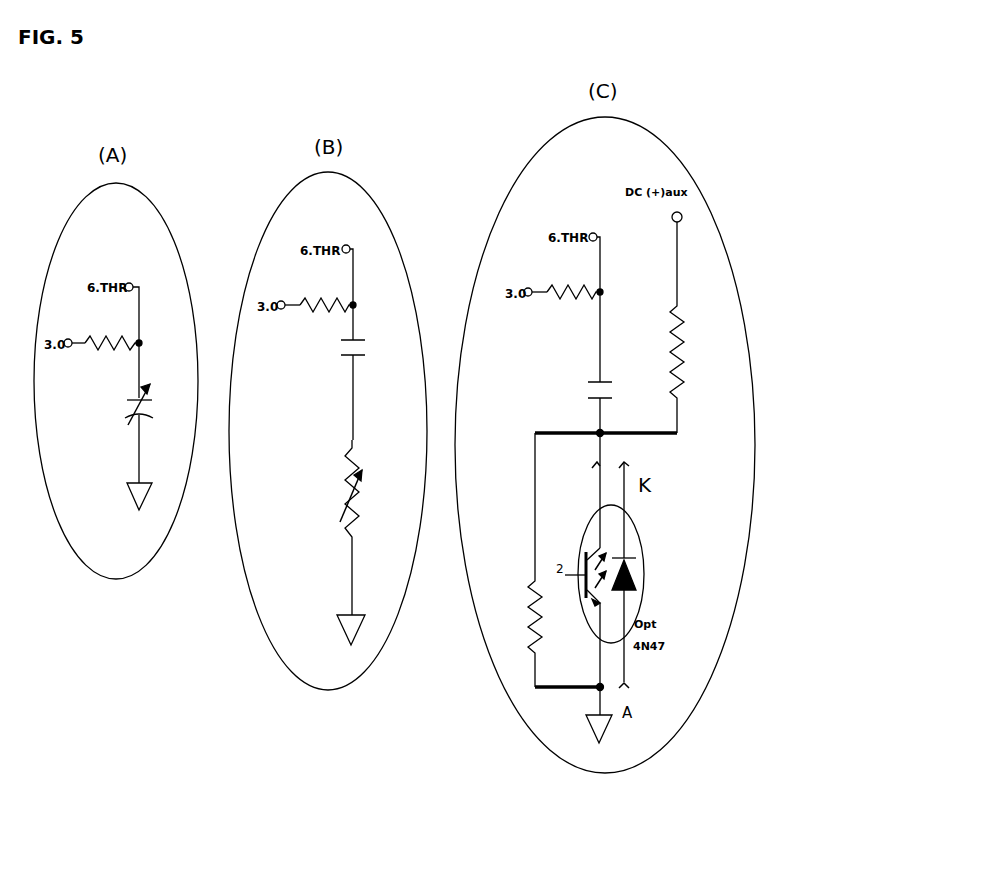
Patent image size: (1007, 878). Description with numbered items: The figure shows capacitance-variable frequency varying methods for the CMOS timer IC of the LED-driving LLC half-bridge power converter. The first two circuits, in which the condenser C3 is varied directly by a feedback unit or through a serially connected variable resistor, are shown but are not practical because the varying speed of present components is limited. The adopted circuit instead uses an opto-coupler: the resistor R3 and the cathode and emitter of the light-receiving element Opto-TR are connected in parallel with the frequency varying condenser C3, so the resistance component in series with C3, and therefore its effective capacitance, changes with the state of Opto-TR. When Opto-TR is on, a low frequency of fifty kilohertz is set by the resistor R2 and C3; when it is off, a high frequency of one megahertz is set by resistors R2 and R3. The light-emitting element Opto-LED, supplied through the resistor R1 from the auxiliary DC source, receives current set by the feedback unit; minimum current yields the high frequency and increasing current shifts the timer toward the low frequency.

The resistor R1 is at (667, 350).
The resistor R2 is at (342, 312).
The resistor R3 is at (546, 615).
The frequency varying condenser C3 is at (383, 382).
The light-receiving element of the opto-coupler Opto-TR is at (583, 578).
The light-emitting element of the opto-coupler Opto-LED is at (633, 585).